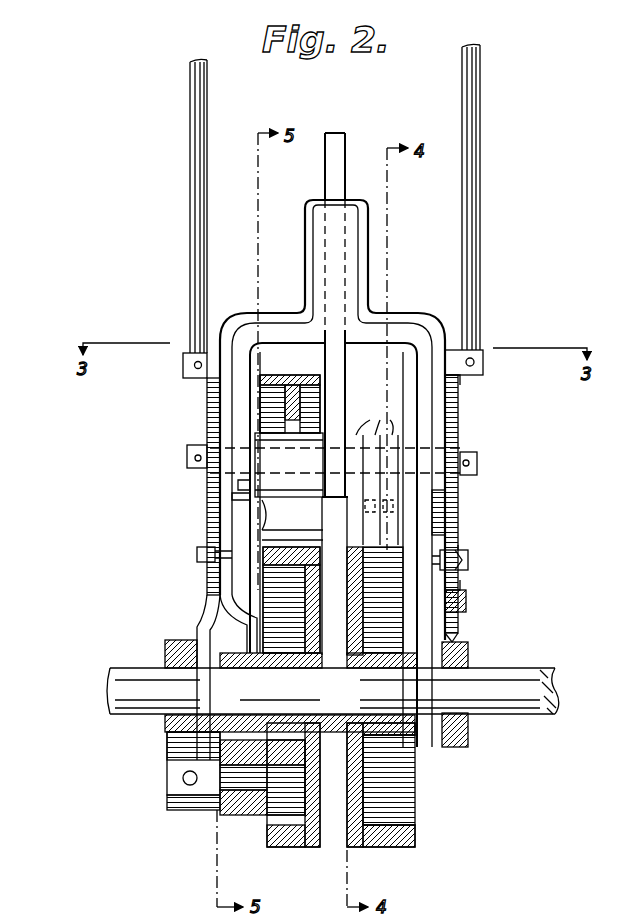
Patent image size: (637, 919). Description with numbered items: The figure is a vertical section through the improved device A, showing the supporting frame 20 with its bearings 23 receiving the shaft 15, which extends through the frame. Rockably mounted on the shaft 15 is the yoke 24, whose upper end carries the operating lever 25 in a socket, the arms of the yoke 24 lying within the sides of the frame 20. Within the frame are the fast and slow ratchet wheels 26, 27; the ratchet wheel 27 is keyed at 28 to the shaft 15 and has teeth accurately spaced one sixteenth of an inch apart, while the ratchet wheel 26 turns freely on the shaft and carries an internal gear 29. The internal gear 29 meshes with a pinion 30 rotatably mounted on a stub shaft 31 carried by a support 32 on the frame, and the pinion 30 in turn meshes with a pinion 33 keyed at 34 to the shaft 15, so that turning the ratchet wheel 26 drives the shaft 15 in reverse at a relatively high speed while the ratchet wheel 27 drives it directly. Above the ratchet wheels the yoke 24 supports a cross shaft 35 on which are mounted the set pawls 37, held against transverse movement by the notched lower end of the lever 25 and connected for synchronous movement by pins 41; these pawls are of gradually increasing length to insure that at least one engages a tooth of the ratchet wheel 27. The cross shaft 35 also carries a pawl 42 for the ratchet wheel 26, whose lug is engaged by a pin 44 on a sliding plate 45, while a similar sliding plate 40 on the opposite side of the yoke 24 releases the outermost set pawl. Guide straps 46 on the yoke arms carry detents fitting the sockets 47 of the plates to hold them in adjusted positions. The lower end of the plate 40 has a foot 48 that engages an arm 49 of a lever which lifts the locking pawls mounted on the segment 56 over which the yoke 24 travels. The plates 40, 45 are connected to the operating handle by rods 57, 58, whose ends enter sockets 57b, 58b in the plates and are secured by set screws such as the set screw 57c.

The shaft 15 is at (510, 680).
The supporting frame 20 is at (468, 648).
The bearings 23 is at (165, 650).
The yoke 24 is at (392, 330).
The operating lever 25 is at (333, 152).
The slow ratchet wheel 26 is at (268, 555).
The fast ratchet wheel 27 is at (415, 553).
The key 28 is at (420, 650).
The internal gear 29 is at (265, 592).
The pinion 30 is at (245, 818).
The stub shaft 31 is at (225, 815).
The support 32 is at (170, 806).
The pinion 33 is at (195, 742).
The key 34 is at (163, 715).
The cross shaft 35 is at (477, 458).
The set pawls 37 is at (372, 430).
The sliding plate 40 is at (460, 415).
The pins 41 is at (445, 513).
The pawl 42 is at (280, 522).
The pin 44 is at (240, 484).
The sliding plate 45 is at (232, 496).
The guide straps 46 is at (518, 558).
The sockets 47 is at (460, 548).
The foot 48 is at (468, 588).
The arm 49 is at (466, 600).
The segment 56 is at (283, 378).
The rod 57 is at (480, 283).
The socket 57b is at (485, 362).
The set screw 57c is at (472, 358).
The rod 58 is at (190, 252).
The socket 58b is at (203, 380).
The improved device A is at (430, 438).